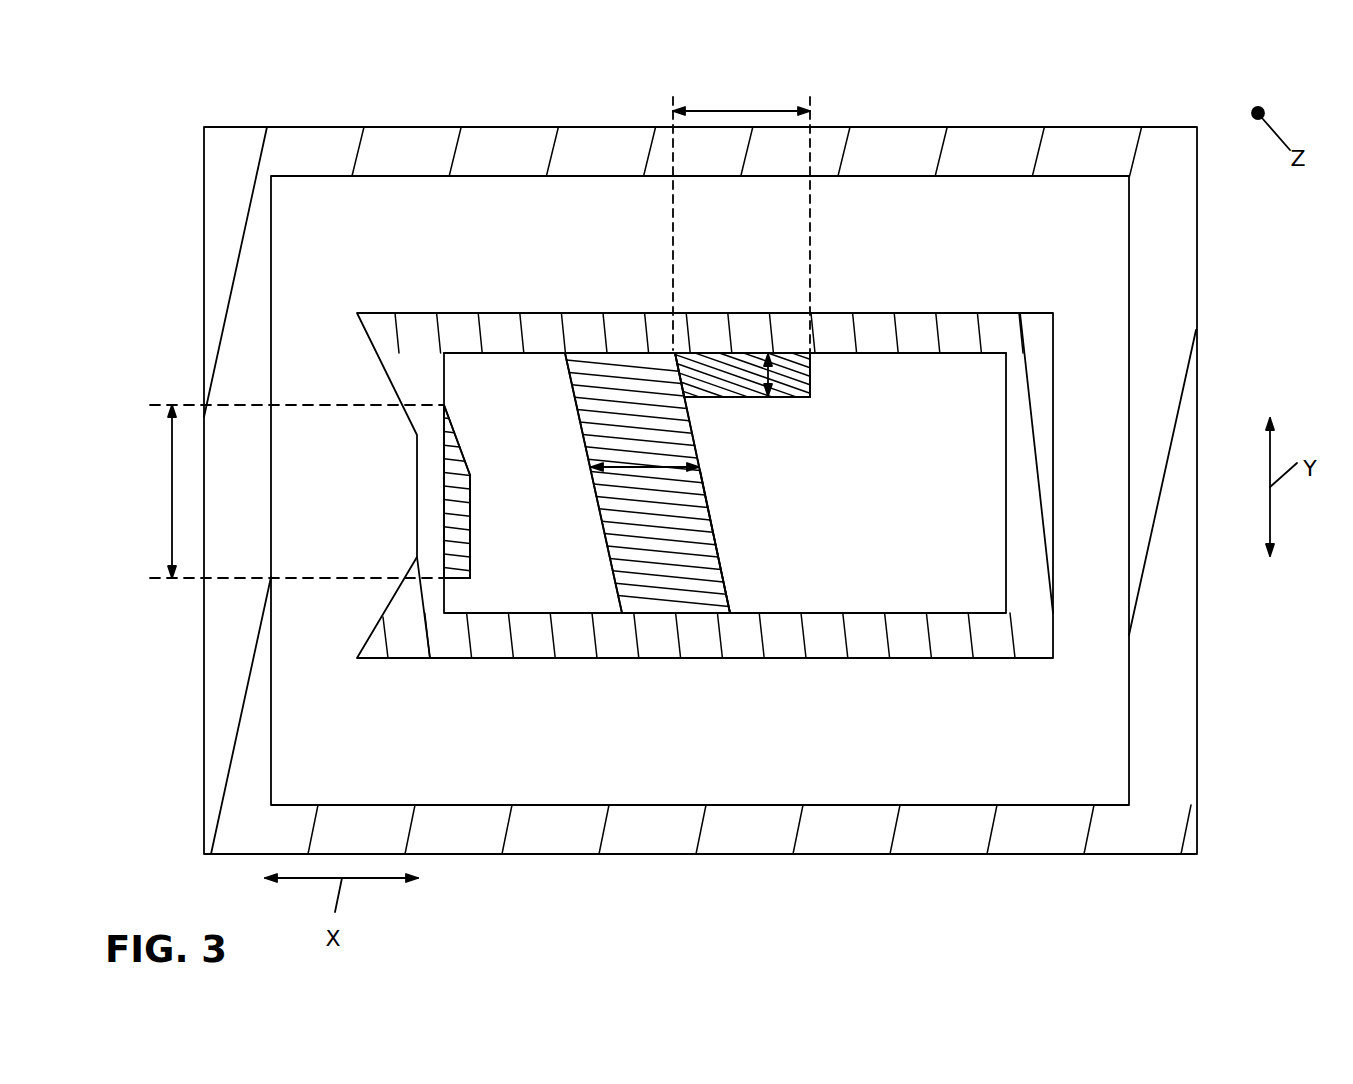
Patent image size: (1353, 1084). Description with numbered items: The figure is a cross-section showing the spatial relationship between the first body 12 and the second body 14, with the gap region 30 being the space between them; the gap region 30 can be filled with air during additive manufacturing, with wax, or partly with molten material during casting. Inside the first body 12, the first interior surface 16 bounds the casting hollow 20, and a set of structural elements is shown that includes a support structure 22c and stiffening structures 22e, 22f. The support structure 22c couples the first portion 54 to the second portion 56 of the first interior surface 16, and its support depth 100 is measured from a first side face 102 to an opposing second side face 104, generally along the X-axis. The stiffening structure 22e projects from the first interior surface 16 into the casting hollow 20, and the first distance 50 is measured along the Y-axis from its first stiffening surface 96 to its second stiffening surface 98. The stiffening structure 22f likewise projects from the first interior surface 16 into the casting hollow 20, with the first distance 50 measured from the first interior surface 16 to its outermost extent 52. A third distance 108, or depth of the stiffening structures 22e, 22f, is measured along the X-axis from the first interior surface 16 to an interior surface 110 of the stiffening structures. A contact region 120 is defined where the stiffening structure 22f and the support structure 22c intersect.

The second body 14 is at (387, 127).
The first body 12 is at (500, 312).
The first interior surface 16 is at (949, 362).
The casting hollow 20 is at (892, 497).
The gap region 30 is at (997, 737).
The first distance 50 is at (770, 353).
The outermost extent 52 is at (712, 398).
The first portion 54 is at (588, 352).
The second portion 56 is at (640, 613).
The first stiffening surface 96 is at (443, 405).
The second stiffening surface 98 is at (444, 580).
The support depth 100 is at (650, 467).
The first side face 102 is at (611, 568).
The second side face 104 is at (717, 530).
The third distance 108 is at (743, 176).
The interior surface 110 is at (805, 404).
The contact region 120 is at (683, 396).
The support structure 22c is at (728, 580).
The stiffening structure 22e is at (474, 557).
The stiffening structure 22f is at (811, 357).